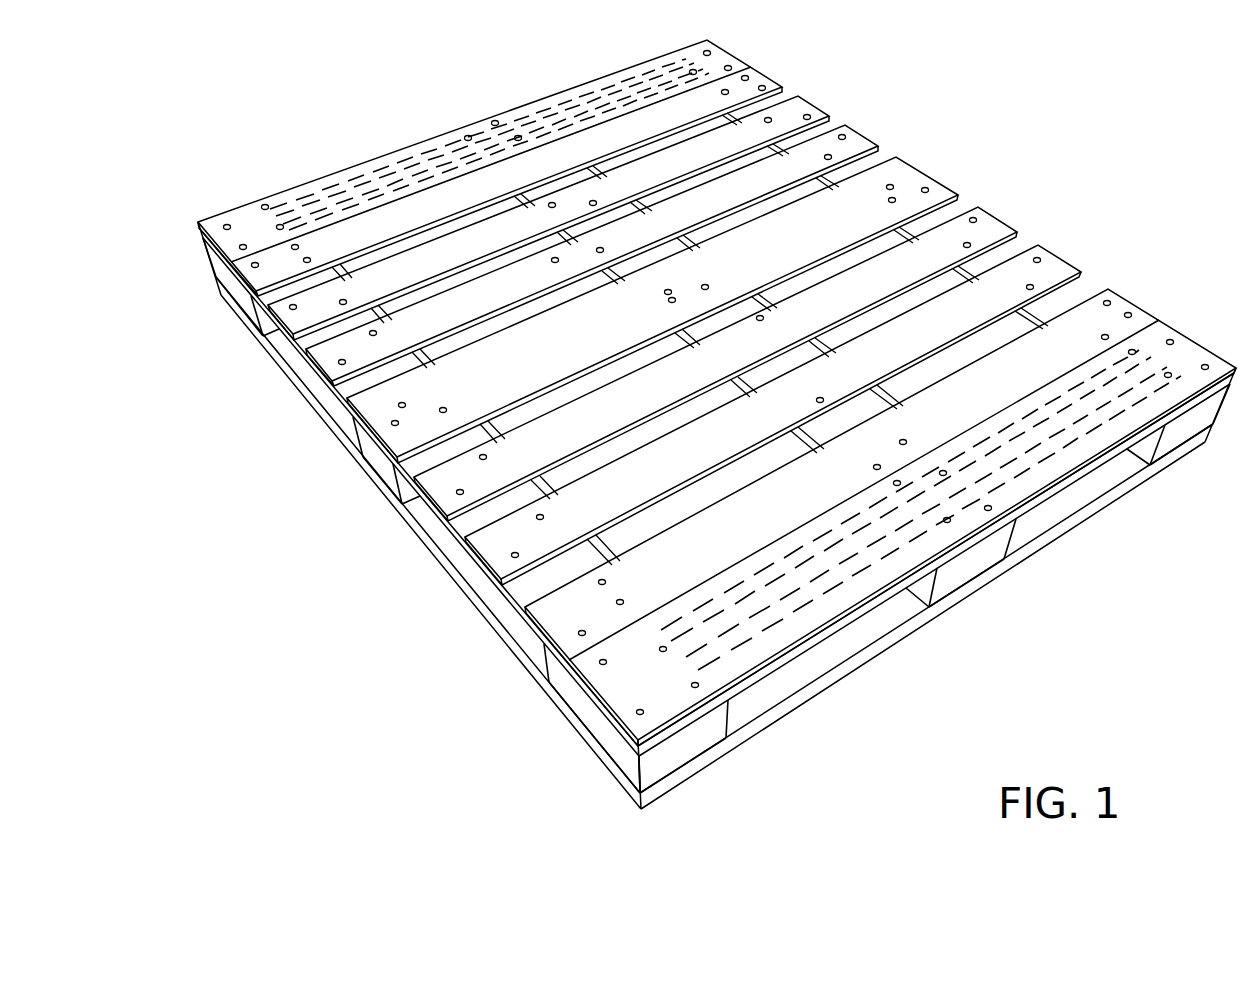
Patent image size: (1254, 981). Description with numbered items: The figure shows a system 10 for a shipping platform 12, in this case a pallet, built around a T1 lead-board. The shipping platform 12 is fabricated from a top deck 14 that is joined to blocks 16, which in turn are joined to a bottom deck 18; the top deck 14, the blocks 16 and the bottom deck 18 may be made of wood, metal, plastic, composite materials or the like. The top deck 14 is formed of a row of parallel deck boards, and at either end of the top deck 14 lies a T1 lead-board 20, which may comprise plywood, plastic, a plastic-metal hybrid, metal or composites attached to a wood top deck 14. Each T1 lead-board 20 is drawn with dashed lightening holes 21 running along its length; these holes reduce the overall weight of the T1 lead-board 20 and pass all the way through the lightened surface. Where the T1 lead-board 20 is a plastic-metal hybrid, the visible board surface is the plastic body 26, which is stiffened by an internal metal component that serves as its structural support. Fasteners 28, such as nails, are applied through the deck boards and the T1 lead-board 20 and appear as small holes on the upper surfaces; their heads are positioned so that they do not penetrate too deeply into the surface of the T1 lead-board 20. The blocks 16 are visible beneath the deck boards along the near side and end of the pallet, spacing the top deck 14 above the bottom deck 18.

The system 10 is at (559, 774).
The shipping platform 12 is at (458, 590).
The top deck 14 is at (337, 407).
The blocks 16 is at (238, 301).
The bottom deck 18 is at (503, 647).
The T1 lead-board 20 is at (267, 187).
The lightening holes 21 is at (843, 577).
The plastic body 26 is at (1030, 484).
The fasteners 28 is at (637, 712).